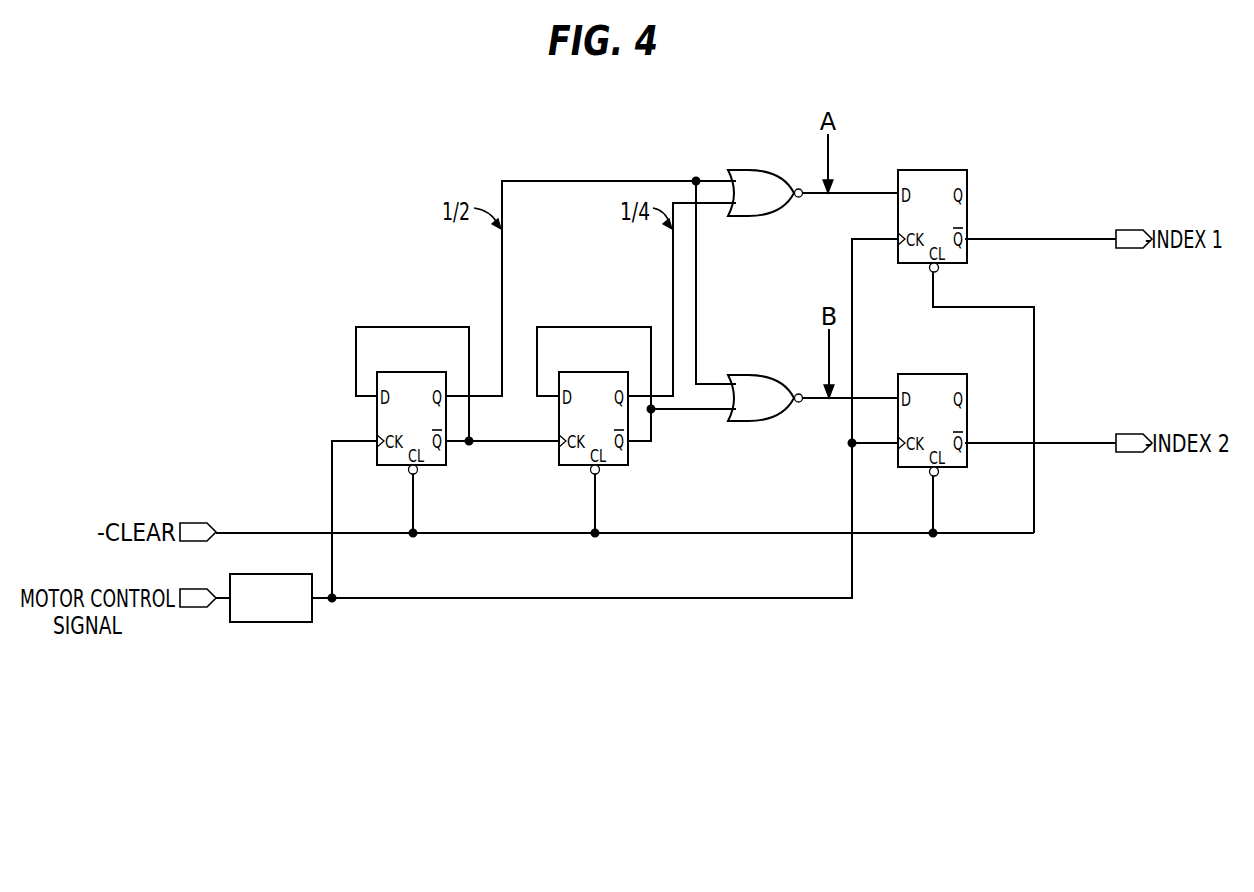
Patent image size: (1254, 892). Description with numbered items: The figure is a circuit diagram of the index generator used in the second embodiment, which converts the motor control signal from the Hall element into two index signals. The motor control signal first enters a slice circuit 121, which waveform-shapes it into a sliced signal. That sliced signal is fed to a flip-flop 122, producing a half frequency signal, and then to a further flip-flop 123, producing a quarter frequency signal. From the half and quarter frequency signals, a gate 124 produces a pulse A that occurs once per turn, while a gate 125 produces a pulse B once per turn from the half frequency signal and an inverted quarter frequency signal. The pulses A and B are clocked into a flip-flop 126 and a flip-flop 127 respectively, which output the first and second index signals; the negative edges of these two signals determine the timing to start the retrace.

The slice circuit 121 is at (308, 618).
The flip-flop 122 is at (418, 372).
The flip-flop 123 is at (598, 372).
The gate 124 is at (766, 170).
The gate 125 is at (768, 374).
The flip-flop 126 is at (962, 176).
The flip-flop 127 is at (962, 380).